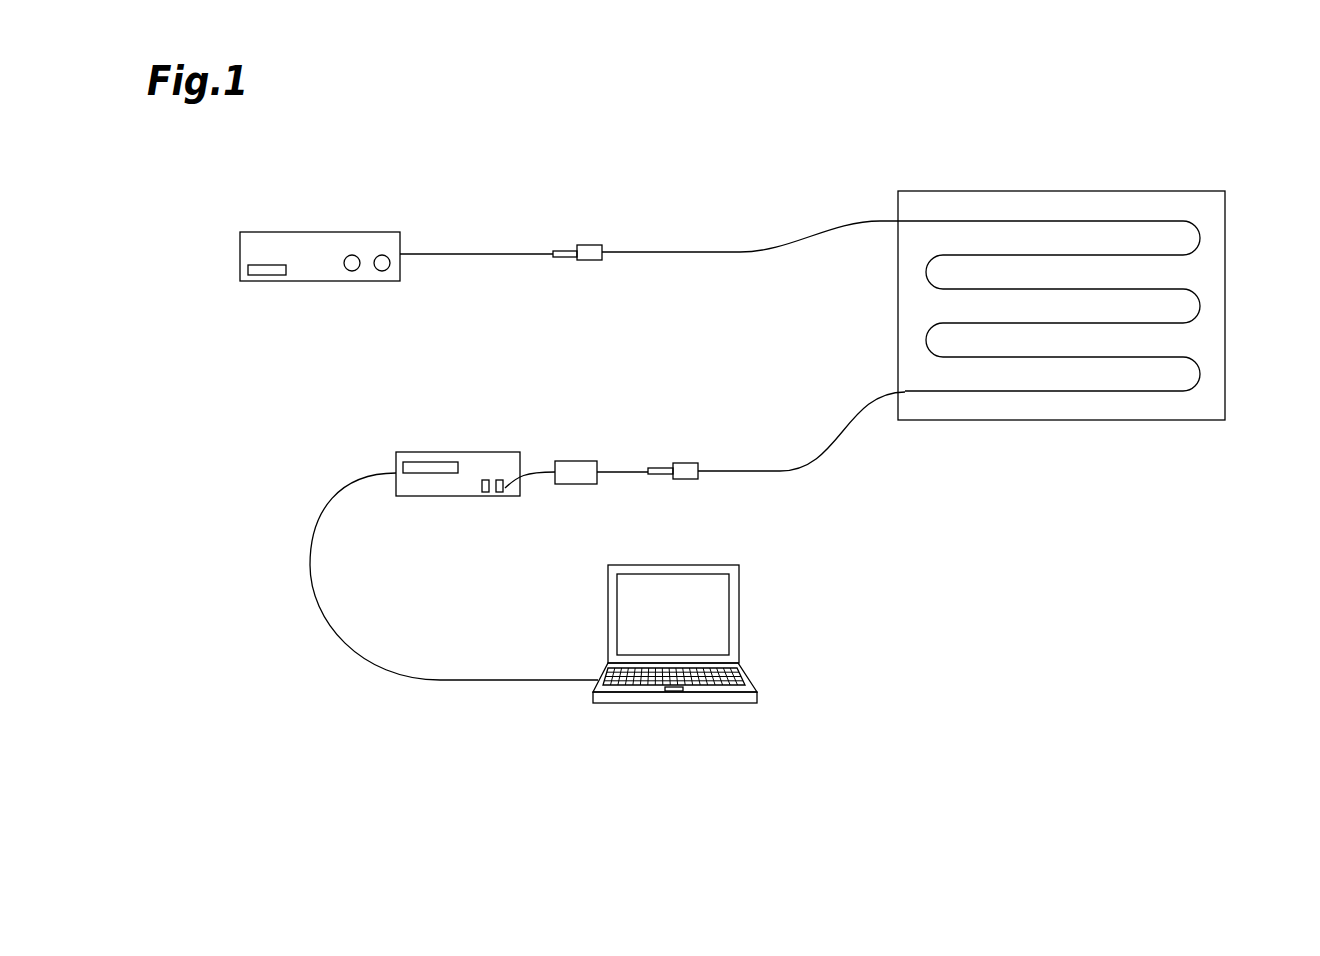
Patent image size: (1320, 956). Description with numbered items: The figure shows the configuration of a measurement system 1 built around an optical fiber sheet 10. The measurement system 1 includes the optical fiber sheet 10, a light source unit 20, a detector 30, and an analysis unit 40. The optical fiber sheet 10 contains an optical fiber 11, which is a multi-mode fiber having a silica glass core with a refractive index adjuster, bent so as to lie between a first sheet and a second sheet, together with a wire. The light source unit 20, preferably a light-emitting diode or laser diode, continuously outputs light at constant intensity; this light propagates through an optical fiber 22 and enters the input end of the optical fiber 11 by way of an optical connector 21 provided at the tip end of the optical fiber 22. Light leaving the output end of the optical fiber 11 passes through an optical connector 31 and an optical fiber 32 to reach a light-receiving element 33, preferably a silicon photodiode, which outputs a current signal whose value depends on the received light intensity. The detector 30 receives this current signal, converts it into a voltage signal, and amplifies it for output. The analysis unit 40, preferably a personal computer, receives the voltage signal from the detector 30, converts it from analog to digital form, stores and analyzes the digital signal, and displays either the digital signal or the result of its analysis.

The measurement system 1 is at (1148, 108).
The optical fiber sheet 10 is at (1172, 191).
The optical fiber 11 is at (1098, 219).
The light source unit 20 is at (365, 232).
The optical connector 21 is at (590, 245).
The optical fiber 22 is at (478, 254).
The detector 30 is at (490, 452).
The optical connector 31 is at (685, 463).
The optical fiber 32 is at (622, 472).
The light-receiving element 33 is at (576, 461).
The analysis unit 40 is at (700, 565).